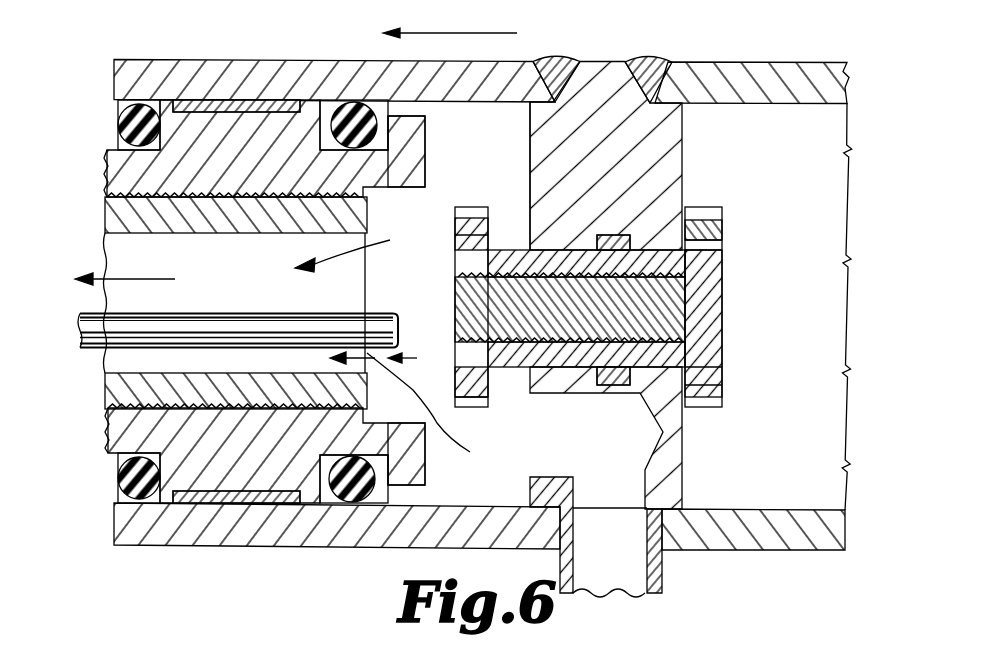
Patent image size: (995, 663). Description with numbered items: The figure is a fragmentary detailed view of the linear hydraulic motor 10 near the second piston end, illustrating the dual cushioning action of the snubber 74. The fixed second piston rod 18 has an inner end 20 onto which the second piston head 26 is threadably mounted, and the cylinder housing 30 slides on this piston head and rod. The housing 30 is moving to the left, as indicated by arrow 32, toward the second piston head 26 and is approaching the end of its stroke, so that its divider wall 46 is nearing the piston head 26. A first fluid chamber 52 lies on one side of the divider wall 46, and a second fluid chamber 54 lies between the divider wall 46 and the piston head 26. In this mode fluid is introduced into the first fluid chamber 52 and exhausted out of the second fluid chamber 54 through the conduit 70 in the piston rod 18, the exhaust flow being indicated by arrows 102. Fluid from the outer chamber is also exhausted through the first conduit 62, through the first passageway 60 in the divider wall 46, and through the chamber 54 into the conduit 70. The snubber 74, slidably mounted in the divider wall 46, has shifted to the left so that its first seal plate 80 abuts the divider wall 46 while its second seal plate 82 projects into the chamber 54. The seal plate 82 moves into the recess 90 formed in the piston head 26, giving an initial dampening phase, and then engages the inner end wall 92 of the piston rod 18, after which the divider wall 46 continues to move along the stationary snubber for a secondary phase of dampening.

The linear hydraulic motor 10 is at (673, 55).
The second piston rod 18 is at (120, 213).
The inner end 20 is at (333, 197).
The second piston head 26 is at (233, 143).
The cylinder housing 30 is at (786, 80).
The arrow 32 is at (463, 33).
The divider wall 46 is at (610, 108).
The first fluid chamber 52 is at (793, 183).
The second fluid chamber 54 is at (497, 125).
The first passageway 60 is at (645, 482).
The first conduit 62 is at (612, 566).
The rod passageway or conduit 70 is at (150, 226).
The snubber 74 is at (700, 317).
The first seal plate 80 is at (713, 385).
The second seal plate 82 is at (456, 257).
The recess 90 is at (265, 345).
The inner end wall 92 is at (348, 505).
The arrows 102 is at (428, 419).